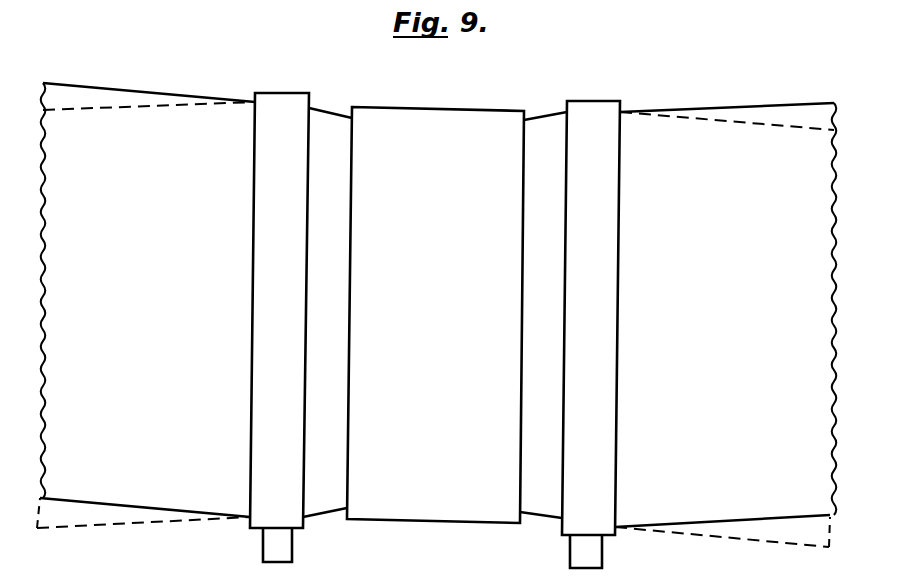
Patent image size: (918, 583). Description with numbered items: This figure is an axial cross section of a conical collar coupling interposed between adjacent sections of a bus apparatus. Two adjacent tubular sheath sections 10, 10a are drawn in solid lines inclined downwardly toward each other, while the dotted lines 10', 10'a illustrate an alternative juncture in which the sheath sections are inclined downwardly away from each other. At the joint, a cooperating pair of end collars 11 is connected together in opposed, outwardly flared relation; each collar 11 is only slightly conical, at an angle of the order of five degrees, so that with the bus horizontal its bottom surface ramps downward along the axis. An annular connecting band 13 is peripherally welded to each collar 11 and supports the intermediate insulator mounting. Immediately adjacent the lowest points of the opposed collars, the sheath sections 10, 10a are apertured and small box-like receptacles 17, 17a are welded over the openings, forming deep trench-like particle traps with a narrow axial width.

The tubular sheath section 10 is at (147, 287).
The dotted line sheath section 10' is at (146, 315).
The end collar 11 is at (327, 118).
The annular connecting band 13 is at (434, 115).
The tubular sheath section 10a is at (730, 106).
The dotted line sheath section 10'a is at (724, 329).
The particle trap receptacle 17 is at (268, 547).
The particle trap receptacle 17a is at (598, 554).